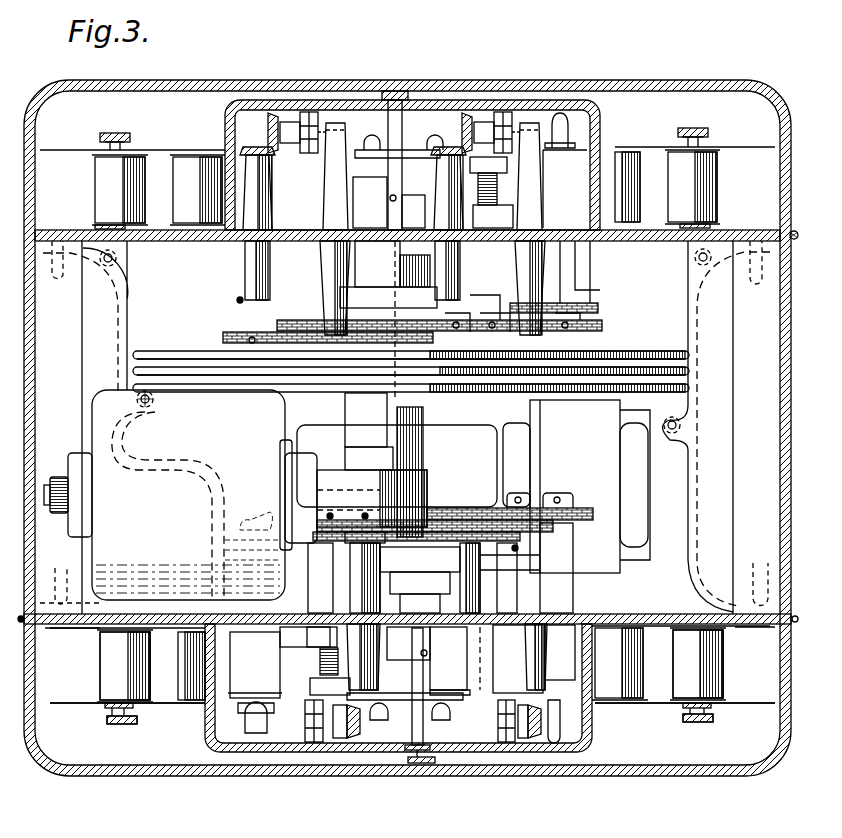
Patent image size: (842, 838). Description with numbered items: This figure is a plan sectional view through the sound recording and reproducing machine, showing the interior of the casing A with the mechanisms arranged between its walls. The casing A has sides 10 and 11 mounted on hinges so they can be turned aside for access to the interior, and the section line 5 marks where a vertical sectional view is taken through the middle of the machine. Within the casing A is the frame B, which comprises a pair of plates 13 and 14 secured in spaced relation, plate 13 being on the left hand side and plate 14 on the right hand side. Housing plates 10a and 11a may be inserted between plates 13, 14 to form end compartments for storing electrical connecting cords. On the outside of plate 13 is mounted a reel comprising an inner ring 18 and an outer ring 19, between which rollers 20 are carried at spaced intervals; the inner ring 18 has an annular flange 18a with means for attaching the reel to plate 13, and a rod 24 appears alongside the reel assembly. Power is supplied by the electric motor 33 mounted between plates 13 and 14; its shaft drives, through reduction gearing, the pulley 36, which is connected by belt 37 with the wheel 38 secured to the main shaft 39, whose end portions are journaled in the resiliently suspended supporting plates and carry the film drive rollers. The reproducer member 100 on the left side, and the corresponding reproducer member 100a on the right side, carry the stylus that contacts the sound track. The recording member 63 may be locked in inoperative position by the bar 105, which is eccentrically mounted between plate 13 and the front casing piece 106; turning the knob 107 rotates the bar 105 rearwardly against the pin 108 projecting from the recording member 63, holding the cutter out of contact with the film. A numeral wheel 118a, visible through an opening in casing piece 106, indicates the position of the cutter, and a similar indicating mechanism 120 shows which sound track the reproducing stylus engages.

The casing A is at (151, 774).
The frame B is at (645, 613).
The section line 5- 5 is at (426, 52).
The side of casing 10 is at (322, 776).
The housing plate 10a is at (118, 285).
The side of casing 11 is at (276, 71).
The housing plate 11a is at (687, 277).
The plate 13 is at (112, 613).
The plate 14 is at (200, 242).
The inner ring 18 is at (101, 650).
The annular flange 18a is at (96, 630).
The outer ring 19 is at (112, 724).
The rollers 20 is at (108, 688).
The rod 24 is at (92, 706).
The electric motor 33 is at (180, 495).
The pulley 36 is at (333, 393).
The belt 37 is at (590, 373).
The wheel 38 is at (632, 353).
The main shaft 39 is at (424, 455).
The recording member 63 is at (450, 677).
The reproducer member 100 is at (270, 640).
The reproducer member 100a is at (567, 196).
The bar 105 is at (410, 727).
The front casing piece 106 is at (590, 741).
The knob 107 is at (413, 773).
The pin 108 is at (427, 655).
The numeral wheel 118a is at (513, 750).
The indicating mechanism 120 is at (278, 774).